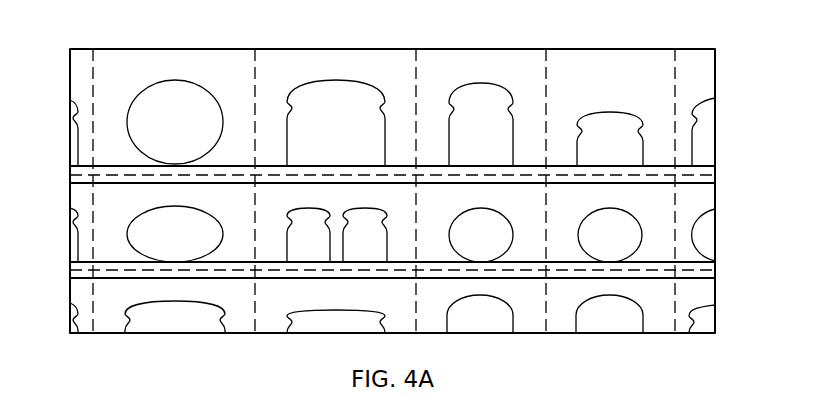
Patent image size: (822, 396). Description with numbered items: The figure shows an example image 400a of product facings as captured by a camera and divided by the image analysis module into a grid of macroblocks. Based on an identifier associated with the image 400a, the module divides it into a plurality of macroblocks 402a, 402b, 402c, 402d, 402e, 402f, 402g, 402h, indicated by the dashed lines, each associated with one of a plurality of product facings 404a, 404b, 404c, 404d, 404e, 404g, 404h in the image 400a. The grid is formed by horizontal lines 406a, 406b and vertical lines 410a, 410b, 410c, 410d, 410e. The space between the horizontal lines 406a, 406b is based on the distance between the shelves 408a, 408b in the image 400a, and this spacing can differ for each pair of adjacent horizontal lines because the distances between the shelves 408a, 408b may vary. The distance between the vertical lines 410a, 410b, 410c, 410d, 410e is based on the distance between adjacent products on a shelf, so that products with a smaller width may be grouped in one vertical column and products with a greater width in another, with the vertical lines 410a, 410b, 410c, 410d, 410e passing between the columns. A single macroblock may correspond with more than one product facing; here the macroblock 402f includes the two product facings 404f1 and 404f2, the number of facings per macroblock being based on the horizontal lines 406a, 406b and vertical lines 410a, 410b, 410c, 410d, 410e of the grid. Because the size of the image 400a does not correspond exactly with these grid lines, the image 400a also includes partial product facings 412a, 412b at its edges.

The image 400a is at (70, 72).
The macroblock 402a is at (242, 73).
The macroblock 402b is at (403, 73).
The macroblock 402c is at (530, 73).
The macroblock 402d is at (662, 73).
The macroblock 402e is at (242, 202).
The macroblock 402f is at (403, 202).
The macroblock 402g is at (531, 202).
The macroblock 402h is at (660, 202).
The product facing 404a is at (193, 161).
The product facing 404b is at (370, 162).
The product facing 404c is at (500, 162).
The product facing 404d is at (628, 163).
The product facing 404e is at (210, 255).
The product facing 404f1 is at (333, 255).
The product facing 404f2 is at (390, 255).
The product facing 404g is at (500, 255).
The product facing 404h is at (628, 255).
The horizontal line 406a is at (70, 175).
The horizontal line 406b is at (70, 270).
The shelf 408a is at (715, 172).
The shelf 408b is at (715, 270).
The vertical line 410a is at (94, 49).
The vertical line 410b is at (256, 49).
The vertical line 410c is at (417, 49).
The vertical line 410d is at (547, 49).
The vertical line 410e is at (676, 49).
The partial product facing 412a is at (70, 319).
The partial product facing 412b is at (715, 105).